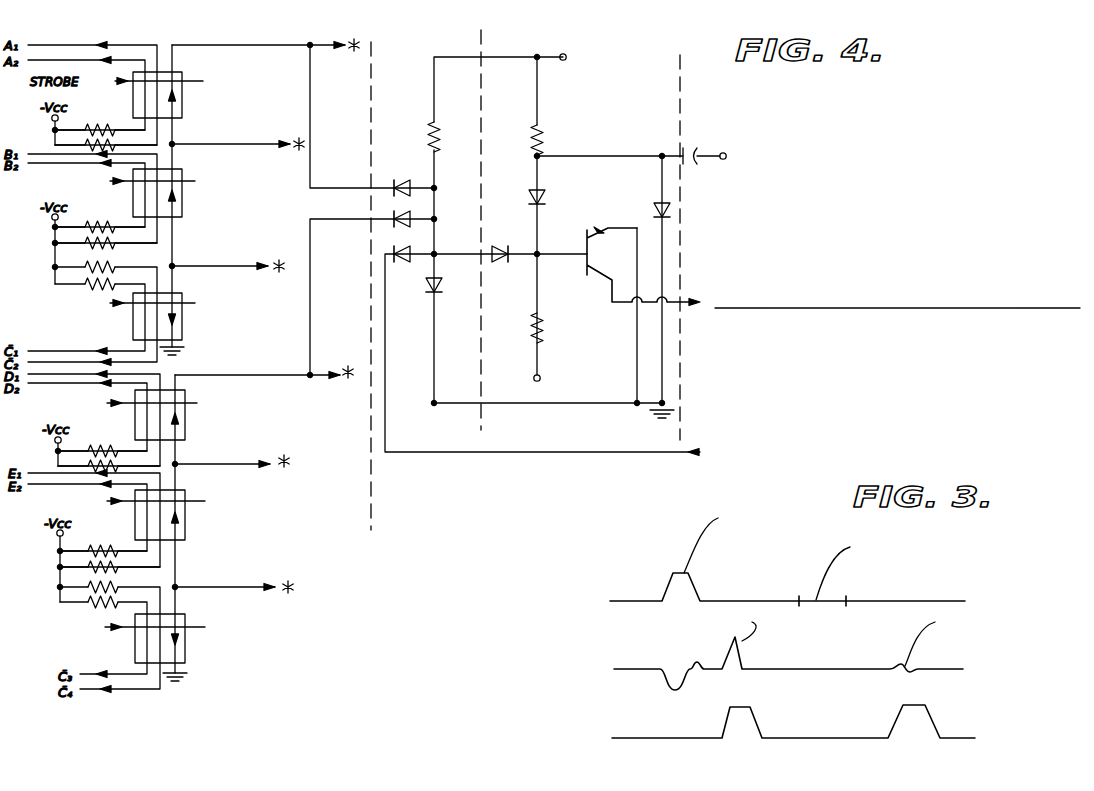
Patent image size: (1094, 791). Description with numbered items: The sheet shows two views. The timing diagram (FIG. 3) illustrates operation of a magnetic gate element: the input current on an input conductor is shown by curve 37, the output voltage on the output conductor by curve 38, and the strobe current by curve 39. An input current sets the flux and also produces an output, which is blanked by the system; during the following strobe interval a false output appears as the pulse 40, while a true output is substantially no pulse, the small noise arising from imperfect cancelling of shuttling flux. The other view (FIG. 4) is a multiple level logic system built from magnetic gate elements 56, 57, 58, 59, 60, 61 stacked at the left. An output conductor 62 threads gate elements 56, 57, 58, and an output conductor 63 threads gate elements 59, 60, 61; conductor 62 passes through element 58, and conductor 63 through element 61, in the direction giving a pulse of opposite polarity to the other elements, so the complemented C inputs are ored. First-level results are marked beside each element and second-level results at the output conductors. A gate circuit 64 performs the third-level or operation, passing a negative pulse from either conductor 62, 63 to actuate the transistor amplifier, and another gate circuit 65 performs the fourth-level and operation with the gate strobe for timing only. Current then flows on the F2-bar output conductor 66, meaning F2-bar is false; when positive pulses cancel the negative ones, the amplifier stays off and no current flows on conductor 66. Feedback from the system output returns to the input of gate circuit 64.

In FIG. 4, the magnetic gate element 56 is at (182, 75).
In FIG. 4, the magnetic gate element 57 is at (182, 181).
In FIG. 4, the magnetic gate element 58 is at (182, 302).
In FIG. 4, the magnetic gate element 59 is at (185, 437).
In FIG. 4, the magnetic gate element 60 is at (185, 540).
In FIG. 4, the magnetic gate element 61 is at (185, 662).
In FIG. 4, the output conductor 62 is at (277, 50).
In FIG. 4, the output conductor 63 is at (285, 352).
In FIG. 4, the gate circuit 64 is at (505, 259).
In FIG. 4, the gate circuit 65 is at (657, 237).
In FIG. 4, the output conductor 66 is at (686, 300).
In FIG. 3, the input current curve 37 is at (638, 600).
In FIG. 3, the output voltage curve 38 is at (637, 668).
In FIG. 3, the strobe current curve 39 is at (655, 737).
In FIG. 3, the false output pulse 40 is at (742, 650).